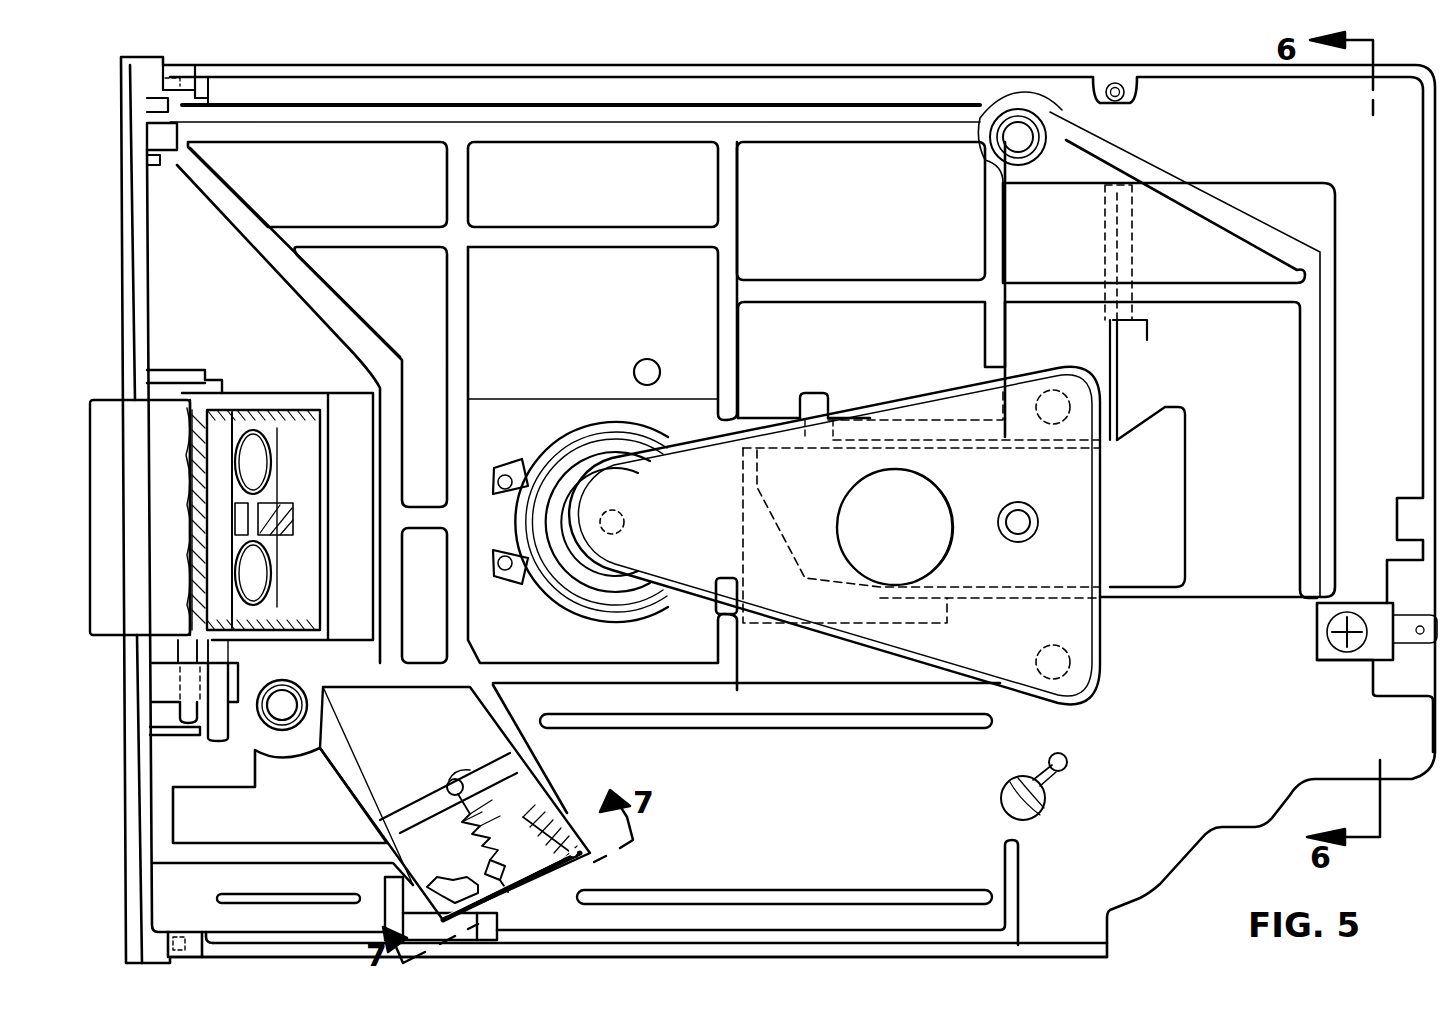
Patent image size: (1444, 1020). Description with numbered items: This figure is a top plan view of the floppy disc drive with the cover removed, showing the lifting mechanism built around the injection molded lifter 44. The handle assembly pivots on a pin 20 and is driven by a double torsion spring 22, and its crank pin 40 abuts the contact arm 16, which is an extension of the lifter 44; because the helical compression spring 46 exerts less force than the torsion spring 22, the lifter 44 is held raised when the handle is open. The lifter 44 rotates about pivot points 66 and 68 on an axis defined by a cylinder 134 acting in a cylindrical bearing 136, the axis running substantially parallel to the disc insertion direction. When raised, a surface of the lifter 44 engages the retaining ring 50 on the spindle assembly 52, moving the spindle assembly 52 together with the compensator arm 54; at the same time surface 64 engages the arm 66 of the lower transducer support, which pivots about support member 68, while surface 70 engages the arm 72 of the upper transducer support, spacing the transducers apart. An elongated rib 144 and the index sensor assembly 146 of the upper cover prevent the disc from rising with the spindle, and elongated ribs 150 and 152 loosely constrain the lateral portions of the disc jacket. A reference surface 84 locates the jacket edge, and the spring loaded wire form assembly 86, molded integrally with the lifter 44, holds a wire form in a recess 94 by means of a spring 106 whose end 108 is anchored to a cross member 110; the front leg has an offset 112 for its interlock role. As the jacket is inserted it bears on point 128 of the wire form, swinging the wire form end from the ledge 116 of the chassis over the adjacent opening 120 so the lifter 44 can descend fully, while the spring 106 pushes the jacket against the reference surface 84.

The contact arm 16 is at (165, 670).
The pin 20 is at (223, 386).
The double torsion spring 22 is at (270, 462).
The crank pin 40 is at (163, 704).
The lifter 44 is at (1140, 152).
The helical compression spring 46 is at (312, 707).
The retaining ring 50 is at (507, 565).
The spindle assembly 52 is at (522, 436).
The compensator arm 54 is at (720, 455).
The surface 64 is at (1283, 340).
The pivot point / arm 66 is at (148, 134).
The pivot point / support member 68 is at (1003, 140).
The surface 70 is at (845, 305).
The arm 72 is at (830, 398).
The reference surface 84 is at (548, 110).
The spring loaded wire form assembly 86 is at (560, 777).
The recess 94 is at (586, 862).
The spring 106 is at (488, 824).
The end of spring 108 is at (462, 770).
The cross member 110 is at (422, 812).
The offset 112 is at (472, 878).
The ledge 116 is at (388, 882).
The opening 120 is at (508, 925).
The point 128 is at (442, 862).
The cylinder 134 is at (192, 137).
The cylindrical bearing 136 is at (163, 162).
The elongated rib 144 is at (752, 727).
The index sensor assembly 146 is at (640, 360).
The elongated rib 150 is at (242, 896).
The elongated rib 152 is at (768, 890).